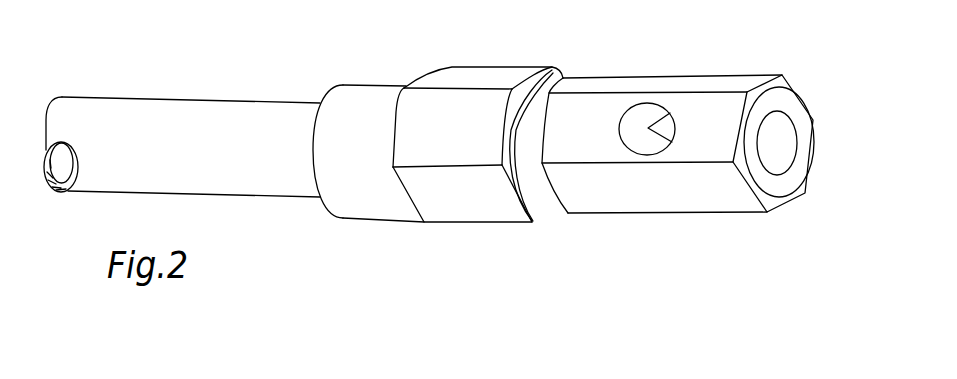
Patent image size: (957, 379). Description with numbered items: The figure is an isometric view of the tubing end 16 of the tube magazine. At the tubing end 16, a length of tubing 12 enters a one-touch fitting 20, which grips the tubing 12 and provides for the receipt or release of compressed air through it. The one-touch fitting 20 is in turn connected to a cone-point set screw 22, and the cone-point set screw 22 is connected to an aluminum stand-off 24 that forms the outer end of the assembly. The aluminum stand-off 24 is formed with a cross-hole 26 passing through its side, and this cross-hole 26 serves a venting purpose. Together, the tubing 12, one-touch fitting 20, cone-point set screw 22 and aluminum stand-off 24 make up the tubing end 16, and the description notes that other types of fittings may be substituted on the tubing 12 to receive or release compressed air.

The tubing 12 is at (245, 110).
The tubing end 16 is at (588, 262).
The one-touch fitting 20 is at (373, 90).
The cone-point set screw 22 is at (792, 110).
The aluminum stand-off 24 is at (711, 116).
The cross-hole 26 is at (642, 113).